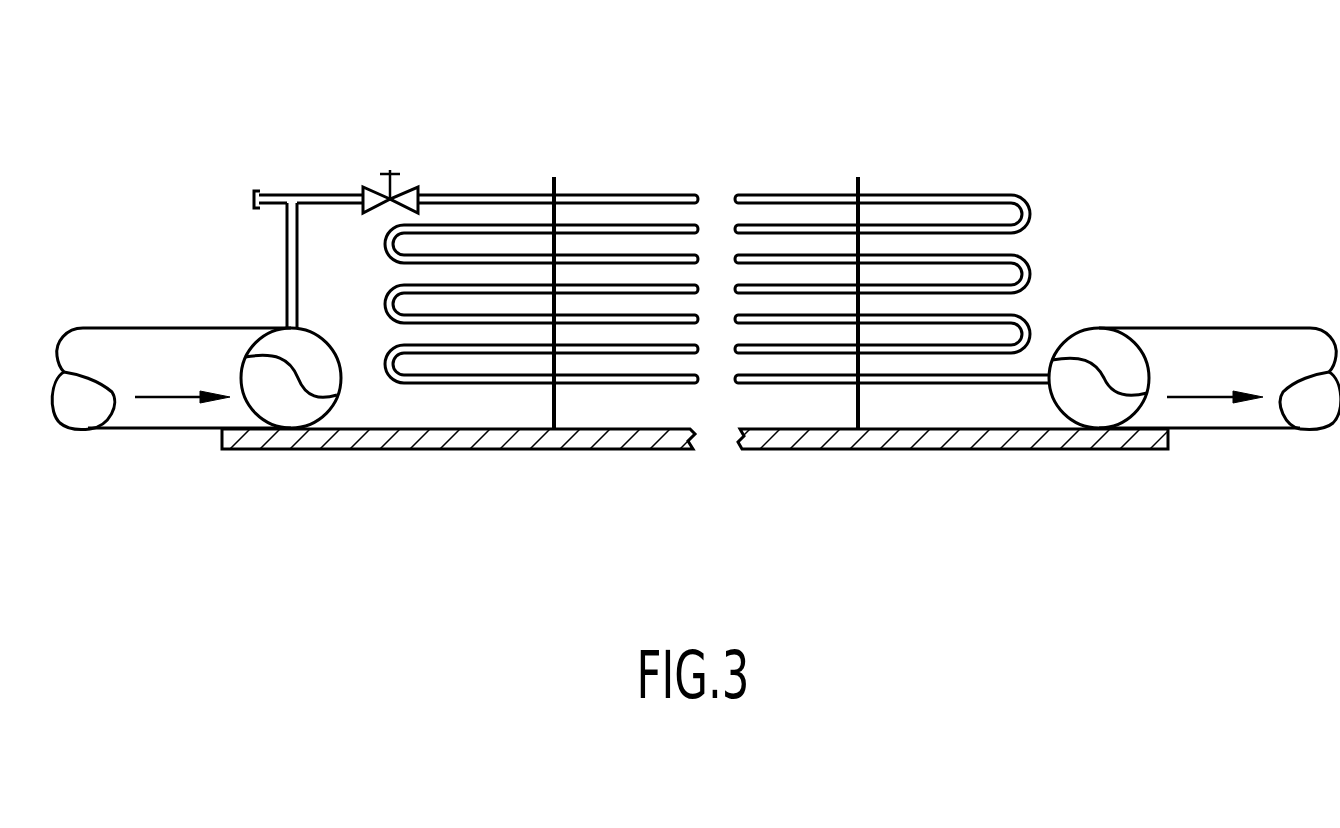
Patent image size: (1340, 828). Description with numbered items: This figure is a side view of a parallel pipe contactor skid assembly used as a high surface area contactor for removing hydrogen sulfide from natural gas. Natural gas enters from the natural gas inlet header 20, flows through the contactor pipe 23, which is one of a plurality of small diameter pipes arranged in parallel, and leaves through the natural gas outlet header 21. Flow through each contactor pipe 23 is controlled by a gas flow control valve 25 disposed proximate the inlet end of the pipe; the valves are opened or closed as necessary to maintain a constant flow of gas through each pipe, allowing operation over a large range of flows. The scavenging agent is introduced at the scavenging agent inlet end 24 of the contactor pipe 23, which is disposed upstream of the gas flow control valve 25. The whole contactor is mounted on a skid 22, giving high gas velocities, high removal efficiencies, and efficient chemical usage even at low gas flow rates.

The natural gas inlet header 20 is at (153, 429).
The natural gas outlet header 21 is at (1172, 328).
The skid 22 is at (563, 449).
The contactor pipe 23 is at (596, 195).
The scavenging agent inlet end 24 is at (268, 194).
The gas flow control valve 25 is at (391, 170).